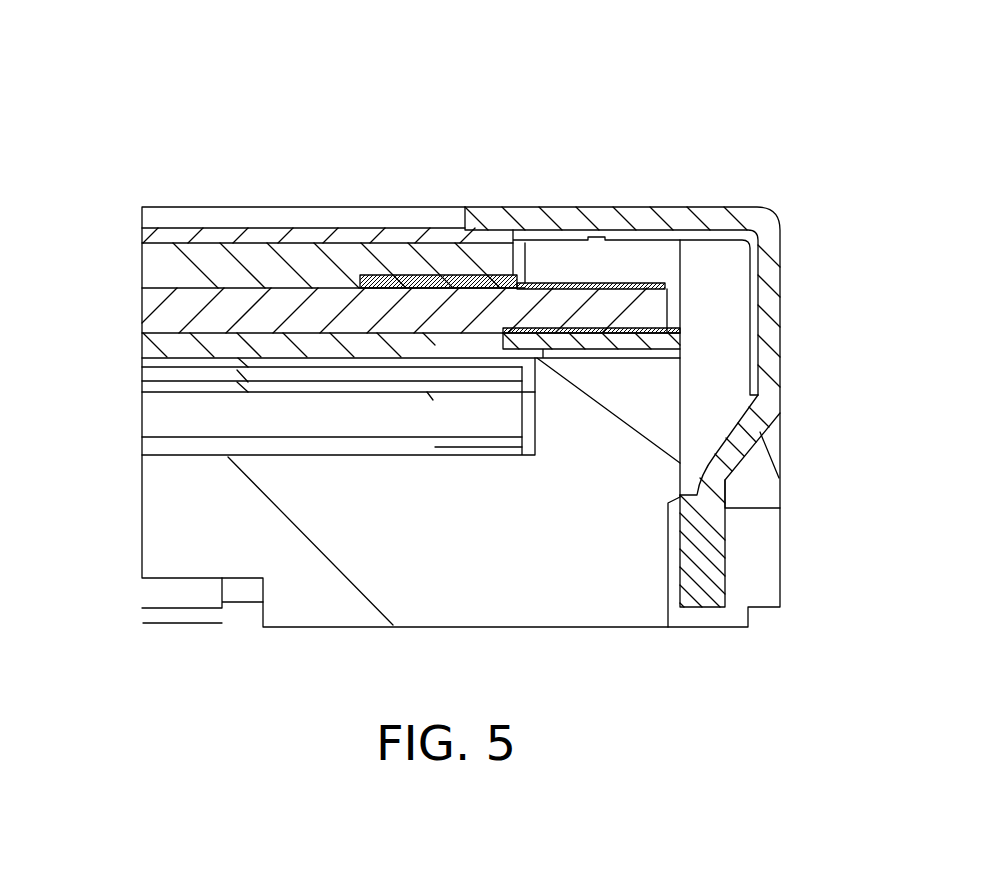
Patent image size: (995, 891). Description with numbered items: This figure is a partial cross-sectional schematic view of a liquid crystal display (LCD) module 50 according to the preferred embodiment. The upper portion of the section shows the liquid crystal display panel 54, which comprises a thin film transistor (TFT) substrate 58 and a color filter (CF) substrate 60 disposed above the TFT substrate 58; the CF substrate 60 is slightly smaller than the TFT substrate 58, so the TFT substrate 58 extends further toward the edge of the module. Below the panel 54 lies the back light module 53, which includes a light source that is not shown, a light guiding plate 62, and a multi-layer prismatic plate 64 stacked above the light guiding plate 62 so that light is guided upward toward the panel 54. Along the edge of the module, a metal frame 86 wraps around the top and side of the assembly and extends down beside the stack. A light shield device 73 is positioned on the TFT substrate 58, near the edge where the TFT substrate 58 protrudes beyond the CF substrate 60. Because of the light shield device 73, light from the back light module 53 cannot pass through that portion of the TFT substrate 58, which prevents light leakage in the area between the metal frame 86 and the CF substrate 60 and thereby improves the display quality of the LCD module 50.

The liquid crystal display module 50 is at (748, 98).
The back light module 53 is at (289, 406).
The liquid crystal display panel 54 is at (361, 293).
The thin film transistor substrate 58 is at (384, 323).
The color filter substrate 60 is at (150, 268).
The light guiding plate 62 is at (307, 441).
The multi-layer prismatic plate 64 is at (150, 375).
The light shield device 73 is at (593, 287).
The metal frame 86 is at (768, 357).